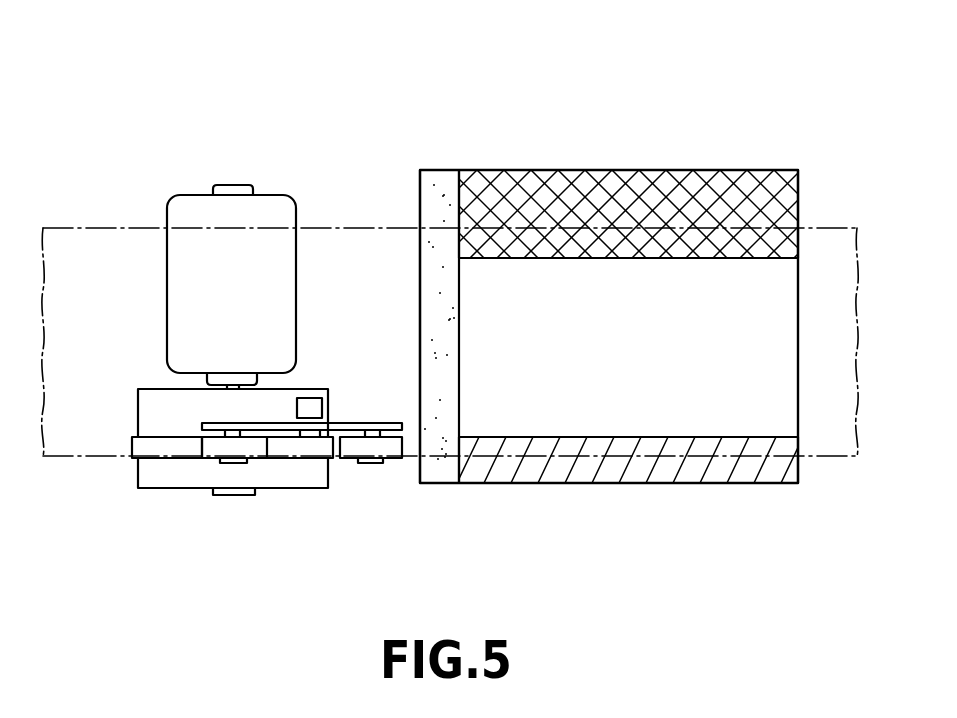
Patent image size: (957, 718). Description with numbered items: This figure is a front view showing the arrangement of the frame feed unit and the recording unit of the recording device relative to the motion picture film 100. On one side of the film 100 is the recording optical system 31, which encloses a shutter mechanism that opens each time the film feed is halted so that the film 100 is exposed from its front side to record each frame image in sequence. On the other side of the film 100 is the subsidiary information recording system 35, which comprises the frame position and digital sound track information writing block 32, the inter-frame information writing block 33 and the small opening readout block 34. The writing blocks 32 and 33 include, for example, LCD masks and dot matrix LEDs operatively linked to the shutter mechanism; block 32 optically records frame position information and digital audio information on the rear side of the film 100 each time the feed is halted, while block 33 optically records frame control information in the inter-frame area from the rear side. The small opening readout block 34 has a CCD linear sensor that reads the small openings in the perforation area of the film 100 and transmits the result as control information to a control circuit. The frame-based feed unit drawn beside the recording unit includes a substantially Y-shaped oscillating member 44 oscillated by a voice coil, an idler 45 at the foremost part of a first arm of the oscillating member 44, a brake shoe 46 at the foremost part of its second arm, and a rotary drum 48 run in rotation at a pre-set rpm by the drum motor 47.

The motion picture film 100 is at (96, 262).
The subsidiary information recording system 35 is at (577, 110).
The inter-frame information writing block 33 is at (441, 178).
The frame position and digital sound track information writing block 32 is at (672, 182).
The recording optical system 31 is at (723, 288).
The small opening readout block 34 is at (652, 474).
The drum motor 47 is at (273, 212).
The rotary drum 48 is at (310, 407).
The oscillating member 44 is at (370, 427).
The idler 45 is at (220, 447).
The brake shoe 46 is at (372, 450).